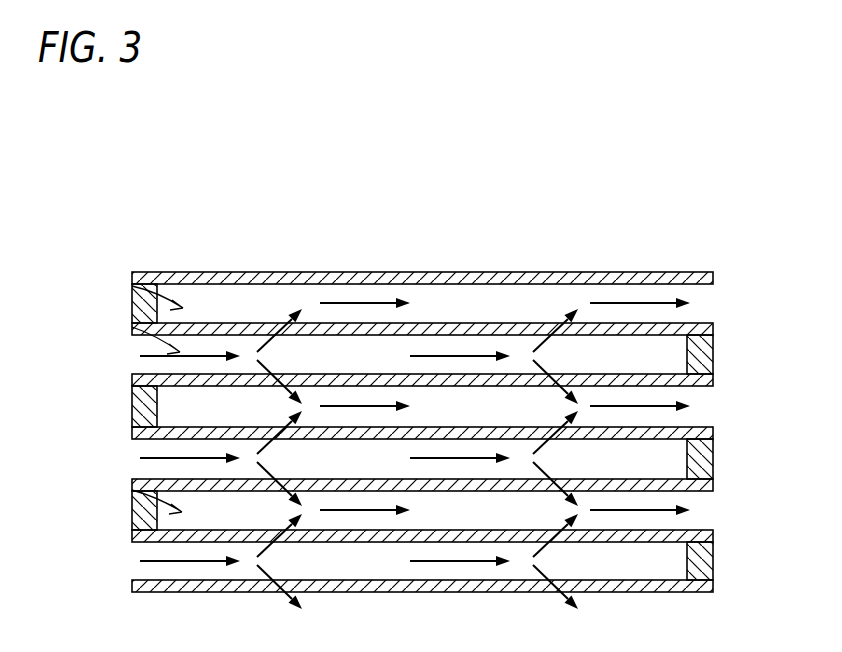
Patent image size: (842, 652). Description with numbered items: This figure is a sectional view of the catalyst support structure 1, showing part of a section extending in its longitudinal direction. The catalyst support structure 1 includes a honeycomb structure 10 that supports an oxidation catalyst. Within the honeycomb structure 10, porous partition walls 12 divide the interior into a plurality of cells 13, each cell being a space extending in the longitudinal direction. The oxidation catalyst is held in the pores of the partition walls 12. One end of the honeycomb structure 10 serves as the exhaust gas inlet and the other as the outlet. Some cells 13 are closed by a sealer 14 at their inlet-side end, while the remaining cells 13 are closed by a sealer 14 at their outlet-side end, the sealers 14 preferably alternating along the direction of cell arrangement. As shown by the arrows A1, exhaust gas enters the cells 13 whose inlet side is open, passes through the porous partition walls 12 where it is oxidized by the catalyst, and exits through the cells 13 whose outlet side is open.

The catalyst support structure 1 is at (275, 208).
The honeycomb structure 10 is at (640, 255).
The partition walls 12 is at (483, 277).
The cells 13 is at (132, 286).
The sealer 14 is at (132, 406).
The arrows A1 is at (278, 333).